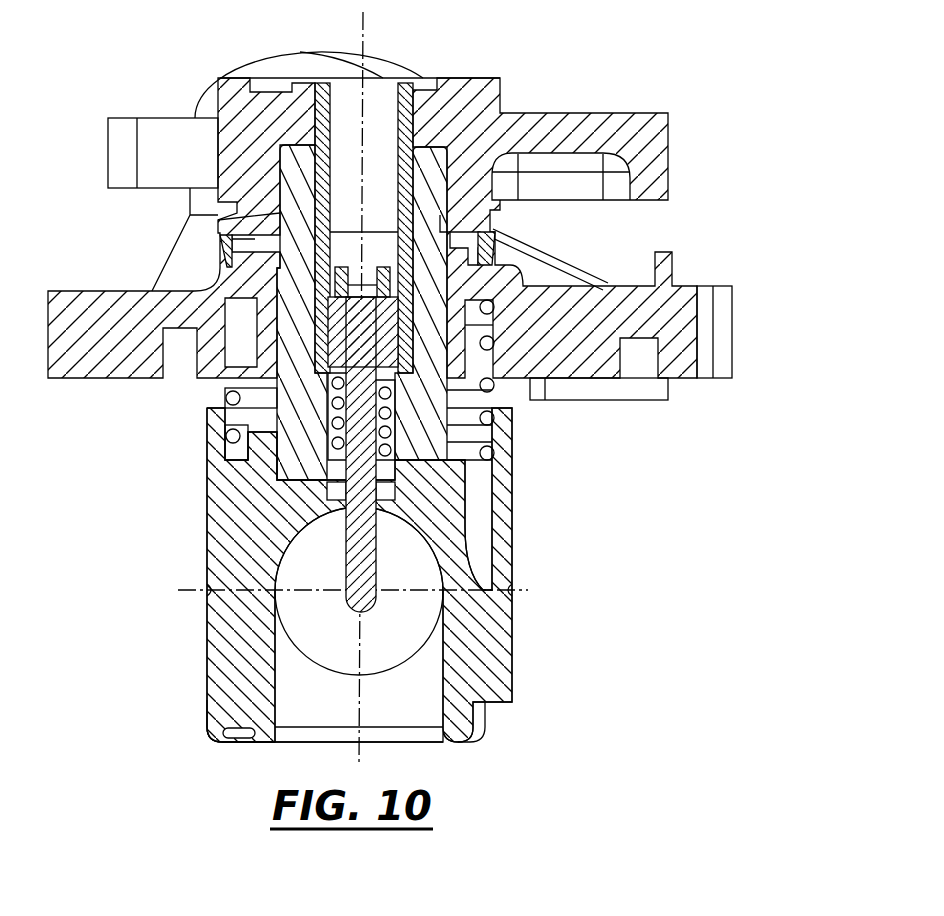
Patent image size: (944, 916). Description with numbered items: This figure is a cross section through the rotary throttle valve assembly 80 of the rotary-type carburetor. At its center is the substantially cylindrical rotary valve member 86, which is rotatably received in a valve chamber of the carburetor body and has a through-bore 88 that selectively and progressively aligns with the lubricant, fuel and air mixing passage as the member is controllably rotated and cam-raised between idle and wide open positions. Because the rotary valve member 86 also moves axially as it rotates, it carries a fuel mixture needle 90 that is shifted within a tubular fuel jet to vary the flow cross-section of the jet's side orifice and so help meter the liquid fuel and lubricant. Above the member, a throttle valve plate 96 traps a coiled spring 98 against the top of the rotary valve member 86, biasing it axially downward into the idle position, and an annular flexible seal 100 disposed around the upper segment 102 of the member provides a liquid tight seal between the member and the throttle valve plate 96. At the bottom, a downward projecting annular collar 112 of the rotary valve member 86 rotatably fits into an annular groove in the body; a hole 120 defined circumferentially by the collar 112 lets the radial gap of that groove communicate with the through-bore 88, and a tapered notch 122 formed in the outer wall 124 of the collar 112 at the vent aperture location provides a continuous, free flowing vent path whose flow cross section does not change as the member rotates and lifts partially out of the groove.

The rotary throttle valve assembly 80 is at (686, 59).
The rotary valve member 86 is at (502, 537).
The through-bore 88 is at (405, 643).
The fuel mixture needle 90 is at (408, 552).
The throttle valve plate 96 is at (677, 302).
The coiled spring 98 is at (493, 387).
The annular flexible seal 100 is at (232, 238).
The upper segment 102 is at (432, 266).
The annular collar 112 is at (207, 722).
The hole 120 is at (404, 713).
The tapered notch 122 is at (497, 703).
The outer wall 124 is at (212, 737).